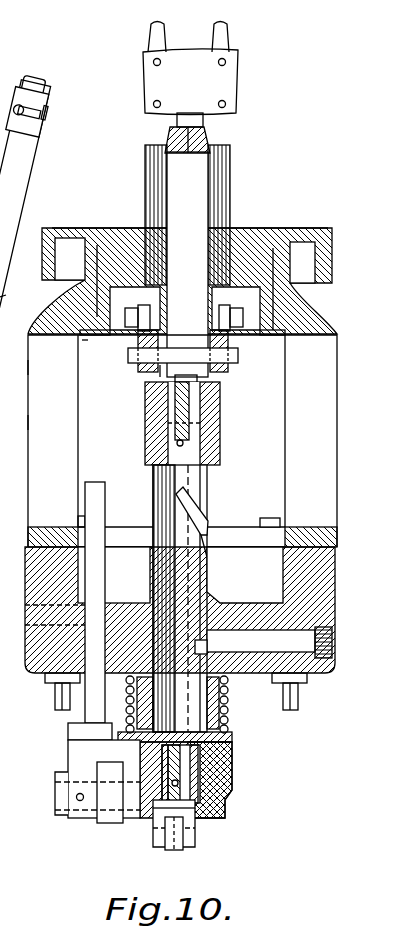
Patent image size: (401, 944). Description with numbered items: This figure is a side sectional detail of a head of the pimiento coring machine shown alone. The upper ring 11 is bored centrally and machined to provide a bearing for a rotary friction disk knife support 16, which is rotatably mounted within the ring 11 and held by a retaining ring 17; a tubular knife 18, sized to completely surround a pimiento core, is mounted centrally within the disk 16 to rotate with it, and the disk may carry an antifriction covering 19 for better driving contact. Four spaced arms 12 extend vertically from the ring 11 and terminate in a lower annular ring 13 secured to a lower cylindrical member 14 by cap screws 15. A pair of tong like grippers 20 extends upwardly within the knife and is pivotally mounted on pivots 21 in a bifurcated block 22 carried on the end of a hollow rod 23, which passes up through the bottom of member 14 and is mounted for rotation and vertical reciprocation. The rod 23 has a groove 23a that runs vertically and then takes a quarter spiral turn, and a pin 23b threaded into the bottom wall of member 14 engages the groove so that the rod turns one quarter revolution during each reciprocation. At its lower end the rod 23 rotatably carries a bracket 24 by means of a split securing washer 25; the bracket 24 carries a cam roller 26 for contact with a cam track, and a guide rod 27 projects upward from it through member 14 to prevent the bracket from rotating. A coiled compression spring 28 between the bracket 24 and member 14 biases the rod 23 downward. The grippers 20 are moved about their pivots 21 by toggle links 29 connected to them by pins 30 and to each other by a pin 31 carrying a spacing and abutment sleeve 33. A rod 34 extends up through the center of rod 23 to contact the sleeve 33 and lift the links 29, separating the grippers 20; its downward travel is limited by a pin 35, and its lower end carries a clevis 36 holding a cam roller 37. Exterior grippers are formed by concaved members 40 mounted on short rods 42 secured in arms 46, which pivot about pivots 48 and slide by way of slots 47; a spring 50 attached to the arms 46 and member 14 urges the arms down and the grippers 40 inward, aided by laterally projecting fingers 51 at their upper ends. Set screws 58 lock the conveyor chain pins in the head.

The upper ring 11 is at (308, 305).
The arms 12 is at (68, 445).
The lower annular ring 13 is at (248, 526).
The lower cylindrical member 14 is at (252, 607).
The cap screws 15 is at (270, 518).
The rotary friction disk knife support 16 is at (267, 230).
The retaining ring 17 is at (86, 338).
The tubular knife 18 is at (231, 199).
The antifriction covering 19 is at (330, 232).
The tong like grippers 20 is at (200, 172).
The pivots 21 is at (219, 417).
The bifurcated block 22 is at (146, 453).
The hollow rod 23 is at (207, 482).
The groove 23a is at (198, 508).
The pin 23b is at (263, 642).
The bracket 24 is at (233, 768).
The split securing washer 25 is at (233, 736).
The cam roller 26 is at (107, 822).
The guide rod 27 is at (100, 577).
The coiled compression spring 28 is at (230, 712).
The toggle links 29 is at (138, 335).
The pins 30 is at (130, 313).
The pin 31 is at (238, 357).
The spacing and abutment sleeve 33 is at (148, 373).
The rod 34 is at (180, 397).
The pin 35 is at (193, 443).
The clevis 36 is at (196, 833).
The cam roller 37 is at (168, 850).
The concaved members 40 is at (214, 65).
The short rods 42 is at (7, 71).
The arms 46 is at (12, 203).
The slot 47 is at (0, 297).
The pivots 48 is at (28, 367).
The spring 50 is at (14, 420).
The laterally projecting fingers 51 is at (44, 117).
The set screws 58 is at (53, 705).